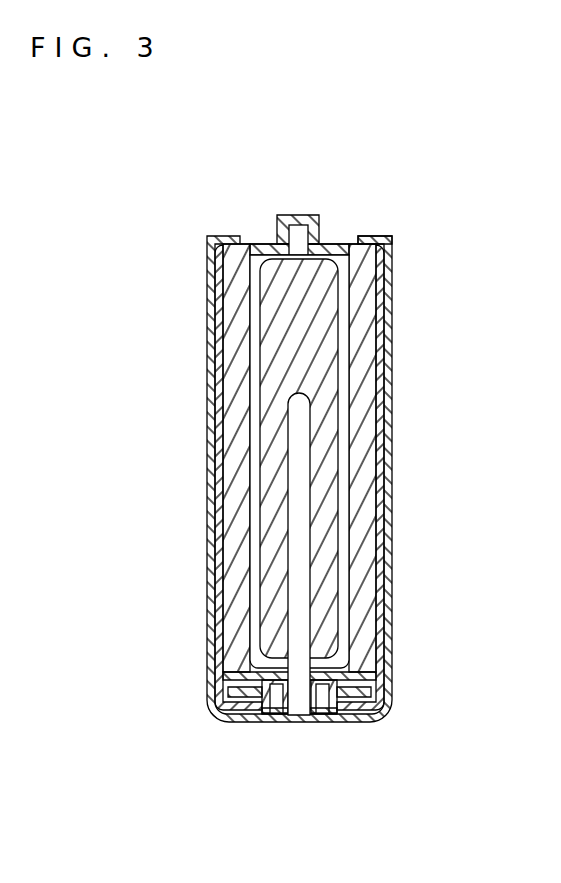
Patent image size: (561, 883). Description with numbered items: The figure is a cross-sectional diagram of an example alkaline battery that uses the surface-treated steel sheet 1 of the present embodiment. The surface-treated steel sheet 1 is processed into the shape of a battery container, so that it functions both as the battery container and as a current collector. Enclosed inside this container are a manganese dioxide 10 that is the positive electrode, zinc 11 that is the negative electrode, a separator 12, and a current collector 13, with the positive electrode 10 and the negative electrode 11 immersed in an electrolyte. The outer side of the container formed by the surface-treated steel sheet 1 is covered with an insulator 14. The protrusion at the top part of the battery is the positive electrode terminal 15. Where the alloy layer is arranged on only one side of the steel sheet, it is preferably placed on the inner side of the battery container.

The surface-treated steel sheet 1 is at (382, 245).
The manganese dioxide 10 is at (362, 328).
The zinc 11 is at (322, 417).
The separator 12 is at (343, 475).
The current collector 13 is at (297, 535).
The insulator 14 is at (388, 593).
The positive electrode terminal 15 is at (298, 213).